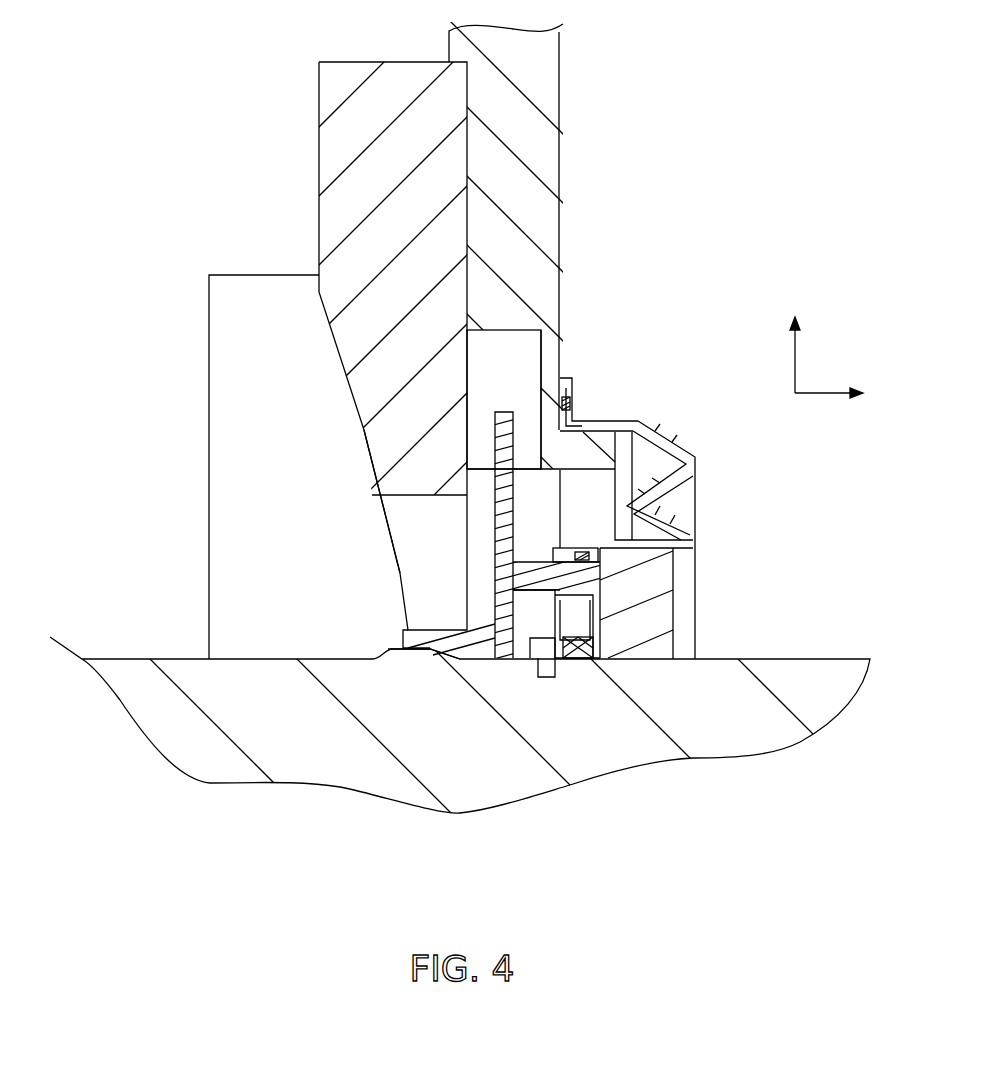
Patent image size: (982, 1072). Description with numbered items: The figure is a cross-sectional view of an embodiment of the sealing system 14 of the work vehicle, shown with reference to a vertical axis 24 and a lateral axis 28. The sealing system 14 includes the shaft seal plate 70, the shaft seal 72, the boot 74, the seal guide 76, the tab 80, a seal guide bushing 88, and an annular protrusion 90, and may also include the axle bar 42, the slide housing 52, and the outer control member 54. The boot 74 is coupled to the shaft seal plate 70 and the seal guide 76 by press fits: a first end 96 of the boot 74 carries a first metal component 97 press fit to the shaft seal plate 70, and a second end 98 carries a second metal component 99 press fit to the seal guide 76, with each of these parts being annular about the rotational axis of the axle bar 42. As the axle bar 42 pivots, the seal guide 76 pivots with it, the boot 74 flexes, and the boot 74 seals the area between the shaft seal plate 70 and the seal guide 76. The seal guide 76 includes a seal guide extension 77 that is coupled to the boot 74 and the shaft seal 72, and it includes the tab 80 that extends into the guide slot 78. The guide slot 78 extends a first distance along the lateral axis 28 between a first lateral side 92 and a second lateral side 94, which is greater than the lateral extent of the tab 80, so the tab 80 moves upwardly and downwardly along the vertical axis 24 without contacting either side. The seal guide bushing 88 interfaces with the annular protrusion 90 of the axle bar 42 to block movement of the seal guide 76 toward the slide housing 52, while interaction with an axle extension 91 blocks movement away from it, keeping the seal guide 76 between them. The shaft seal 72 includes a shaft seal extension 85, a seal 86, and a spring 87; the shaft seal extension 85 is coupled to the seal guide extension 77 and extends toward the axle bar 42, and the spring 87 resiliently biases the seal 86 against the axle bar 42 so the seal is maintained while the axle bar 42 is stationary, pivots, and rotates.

The sealing system 14 is at (730, 263).
The vertical axis 24 is at (793, 372).
The lateral axis 28 is at (823, 394).
The axle bar 42 is at (819, 656).
The slide housing 52 is at (263, 275).
The outer control member 54 is at (319, 177).
The shaft seal plate 70 is at (561, 162).
The shaft seal 72 is at (620, 598).
The boot 74 is at (696, 497).
The seal guide 76 is at (495, 514).
The seal guide extension 77 is at (696, 548).
The guide slot 78 is at (543, 338).
The tab 80 is at (561, 384).
The shaft seal extension 85 is at (606, 620).
The seal 86 is at (589, 661).
The spring 87 is at (564, 660).
The seal guide bushing 88 is at (455, 664).
The annular protrusion 90 is at (389, 651).
The axle extension 91 is at (538, 677).
The first lateral side 92 is at (467, 371).
The second lateral side 94 is at (542, 362).
The first end 96 is at (583, 394).
The first metal component 97 is at (572, 404).
The second end 98 is at (568, 544).
The second metal component 99 is at (585, 549).